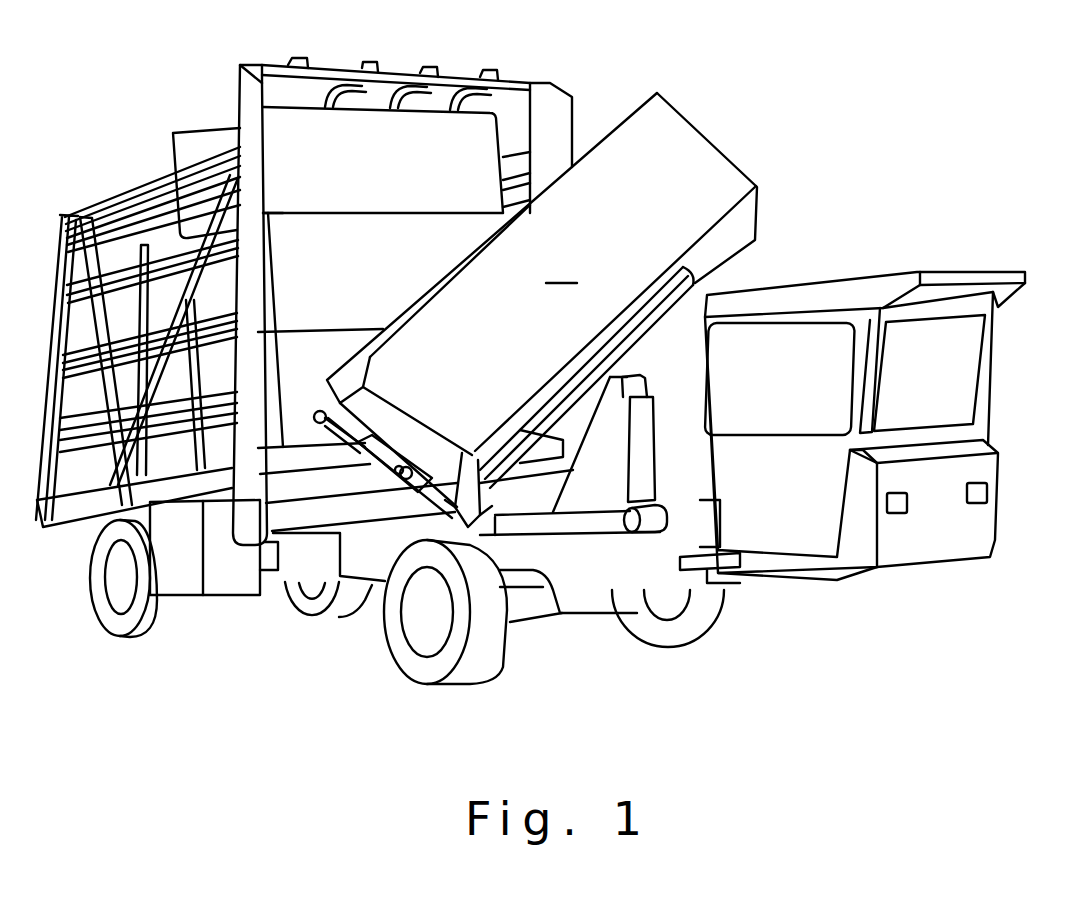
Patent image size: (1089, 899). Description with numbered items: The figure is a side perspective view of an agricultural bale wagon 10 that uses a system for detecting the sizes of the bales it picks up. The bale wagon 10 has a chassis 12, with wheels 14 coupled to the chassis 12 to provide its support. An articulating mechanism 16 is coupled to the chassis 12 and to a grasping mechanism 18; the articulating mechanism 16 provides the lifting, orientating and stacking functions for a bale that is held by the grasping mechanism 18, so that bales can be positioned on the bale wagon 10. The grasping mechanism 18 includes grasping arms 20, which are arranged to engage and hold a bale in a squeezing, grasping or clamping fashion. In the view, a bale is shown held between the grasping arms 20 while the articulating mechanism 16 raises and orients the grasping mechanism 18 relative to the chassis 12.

The bale wagon 10 is at (965, 170).
The chassis 12 is at (598, 614).
The wheels 14 is at (102, 607).
The articulating mechanism 16 is at (297, 643).
The grasping mechanism 18 is at (333, 342).
The grasping arms 20 is at (371, 337).